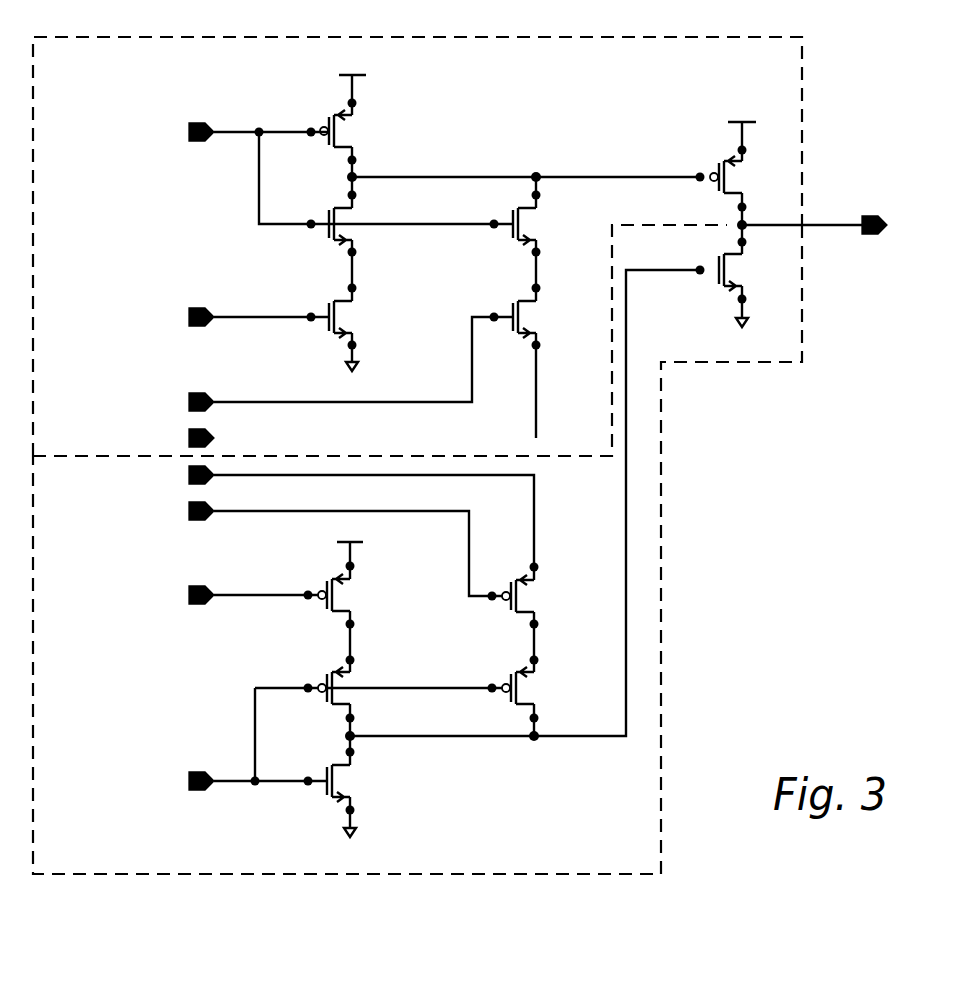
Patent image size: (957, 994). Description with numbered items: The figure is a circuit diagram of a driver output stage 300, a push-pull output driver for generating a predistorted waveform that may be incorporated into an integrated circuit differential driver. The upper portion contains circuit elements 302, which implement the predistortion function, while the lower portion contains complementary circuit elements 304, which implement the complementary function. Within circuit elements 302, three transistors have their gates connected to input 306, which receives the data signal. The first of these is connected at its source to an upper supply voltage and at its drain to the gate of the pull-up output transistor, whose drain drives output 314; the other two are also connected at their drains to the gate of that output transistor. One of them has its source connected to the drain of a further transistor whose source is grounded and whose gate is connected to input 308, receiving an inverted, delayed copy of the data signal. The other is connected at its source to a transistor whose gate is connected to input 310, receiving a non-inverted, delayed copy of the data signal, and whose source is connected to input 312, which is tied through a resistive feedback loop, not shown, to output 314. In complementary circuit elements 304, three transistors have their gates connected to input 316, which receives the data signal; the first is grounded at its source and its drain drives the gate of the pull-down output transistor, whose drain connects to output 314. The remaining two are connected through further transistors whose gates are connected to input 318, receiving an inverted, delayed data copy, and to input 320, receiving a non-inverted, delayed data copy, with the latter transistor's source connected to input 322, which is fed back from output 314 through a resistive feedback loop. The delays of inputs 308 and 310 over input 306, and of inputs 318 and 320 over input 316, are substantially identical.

The driver output stage 300 is at (793, 567).
The circuit elements 302 is at (802, 134).
The complementary circuit elements 304 is at (802, 313).
The input 306 is at (207, 128).
The input 308 is at (207, 313).
The input 310 is at (207, 398).
The input 312 is at (207, 434).
The output 314 is at (870, 208).
The input 316 is at (207, 787).
The input 318 is at (207, 591).
The input 320 is at (207, 517).
The input 322 is at (207, 481).